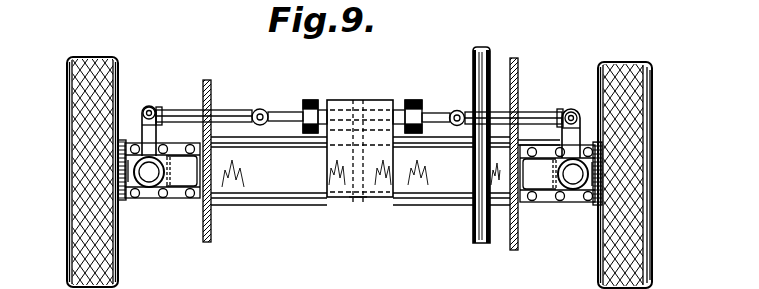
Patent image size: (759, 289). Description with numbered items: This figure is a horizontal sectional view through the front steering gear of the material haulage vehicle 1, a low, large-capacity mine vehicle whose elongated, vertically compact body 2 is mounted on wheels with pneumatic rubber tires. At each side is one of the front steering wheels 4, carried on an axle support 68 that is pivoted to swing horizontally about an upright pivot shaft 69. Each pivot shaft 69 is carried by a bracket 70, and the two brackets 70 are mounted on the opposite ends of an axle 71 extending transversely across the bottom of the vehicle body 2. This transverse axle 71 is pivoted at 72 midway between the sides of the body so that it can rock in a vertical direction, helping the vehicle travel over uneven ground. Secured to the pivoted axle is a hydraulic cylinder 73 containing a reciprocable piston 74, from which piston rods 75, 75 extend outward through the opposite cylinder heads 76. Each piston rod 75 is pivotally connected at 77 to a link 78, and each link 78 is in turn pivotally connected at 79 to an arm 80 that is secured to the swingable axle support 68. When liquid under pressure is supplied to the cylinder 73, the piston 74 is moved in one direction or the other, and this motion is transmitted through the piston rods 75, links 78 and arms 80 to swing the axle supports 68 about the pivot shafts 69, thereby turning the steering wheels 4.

The material haulage vehicle 1 is at (519, 58).
The vehicle body 2 is at (212, 90).
The steering wheels 4 is at (80, 233).
The axle supports 68 is at (133, 198).
The upright pivot shafts 69 is at (128, 163).
The brackets 70 is at (180, 173).
The axle 71 is at (317, 173).
The pivot 72 is at (360, 198).
The hydraulic cylinder 73 is at (338, 100).
The piston 74 is at (363, 117).
The piston rods 75 is at (277, 111).
The cylinder heads 76 is at (308, 100).
The pivotal connection 77 is at (260, 109).
The links 78 is at (180, 110).
The pivotal connection 79 is at (149, 105).
The arms 80 is at (153, 106).